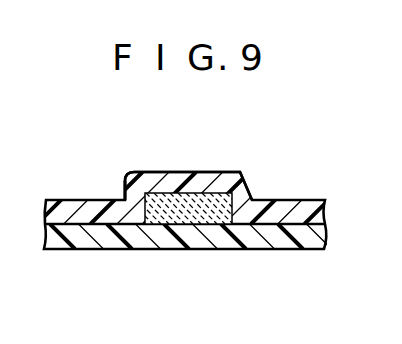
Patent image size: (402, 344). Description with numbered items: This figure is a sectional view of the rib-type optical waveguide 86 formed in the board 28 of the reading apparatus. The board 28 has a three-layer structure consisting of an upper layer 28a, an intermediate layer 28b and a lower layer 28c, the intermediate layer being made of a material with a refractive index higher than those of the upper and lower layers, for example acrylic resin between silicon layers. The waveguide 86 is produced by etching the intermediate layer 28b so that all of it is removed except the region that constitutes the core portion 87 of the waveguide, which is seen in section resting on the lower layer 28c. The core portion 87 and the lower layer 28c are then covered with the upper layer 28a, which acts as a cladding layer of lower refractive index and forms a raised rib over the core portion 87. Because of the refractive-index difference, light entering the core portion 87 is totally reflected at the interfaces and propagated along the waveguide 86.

The board 28 is at (198, 218).
The upper layer 28a is at (287, 210).
The intermediate layer 28b is at (155, 197).
The lower layer 28c is at (266, 238).
The rib-type optical waveguide 86 is at (110, 185).
The core portion 87 is at (191, 208).